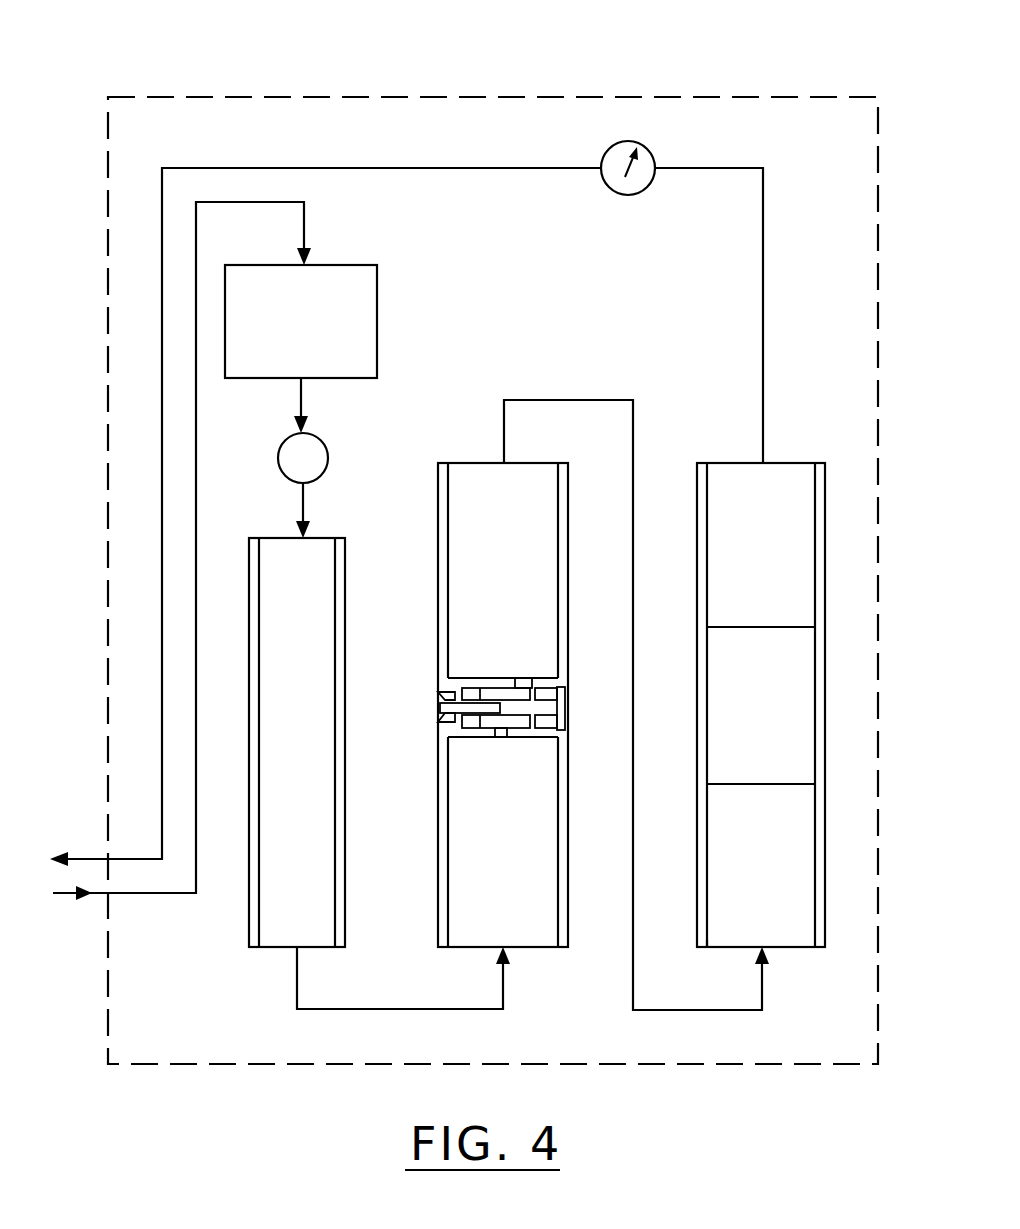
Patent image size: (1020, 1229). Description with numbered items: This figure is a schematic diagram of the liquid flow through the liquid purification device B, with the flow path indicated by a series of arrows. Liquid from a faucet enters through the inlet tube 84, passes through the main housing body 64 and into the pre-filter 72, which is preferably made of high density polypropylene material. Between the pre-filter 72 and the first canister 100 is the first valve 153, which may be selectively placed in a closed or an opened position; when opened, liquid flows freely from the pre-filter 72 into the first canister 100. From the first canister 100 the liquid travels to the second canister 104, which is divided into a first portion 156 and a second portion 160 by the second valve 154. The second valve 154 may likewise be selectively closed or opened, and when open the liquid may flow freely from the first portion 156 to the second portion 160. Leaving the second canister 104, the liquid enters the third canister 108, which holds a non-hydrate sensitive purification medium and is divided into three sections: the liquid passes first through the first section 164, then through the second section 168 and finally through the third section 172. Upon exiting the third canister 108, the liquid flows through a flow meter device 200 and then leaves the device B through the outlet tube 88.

The device B is at (281, 86).
The main housing body 64 is at (553, 97).
The pre-filter 72 is at (377, 322).
The inlet tube 84 is at (133, 893).
The outlet tube 88 is at (130, 859).
The first canister 100 is at (345, 633).
The second canister 104 is at (593, 698).
The third canister 108 is at (780, 666).
The first valve 153 is at (332, 456).
The second valve 154 is at (576, 712).
The first portion 156 is at (521, 849).
The second portion 160 is at (521, 557).
The first section 164 is at (778, 877).
The second section 168 is at (777, 712).
The third section 172 is at (779, 567).
The flow meter device 200 is at (613, 192).